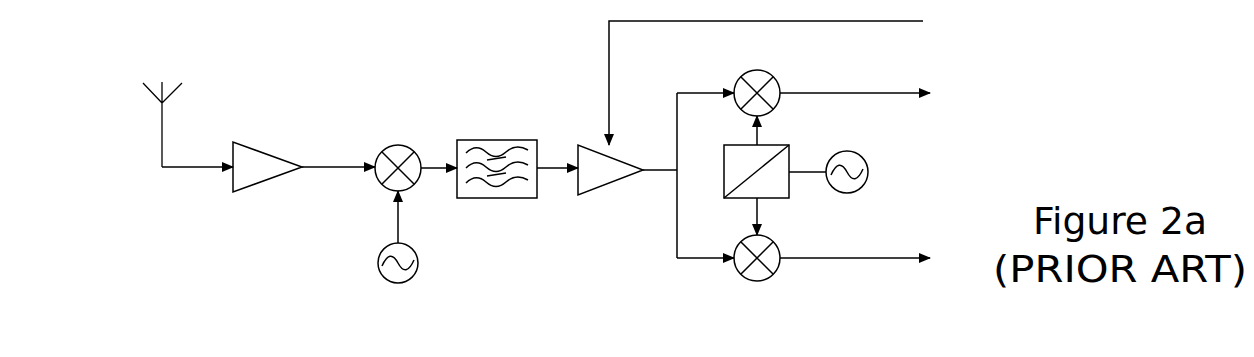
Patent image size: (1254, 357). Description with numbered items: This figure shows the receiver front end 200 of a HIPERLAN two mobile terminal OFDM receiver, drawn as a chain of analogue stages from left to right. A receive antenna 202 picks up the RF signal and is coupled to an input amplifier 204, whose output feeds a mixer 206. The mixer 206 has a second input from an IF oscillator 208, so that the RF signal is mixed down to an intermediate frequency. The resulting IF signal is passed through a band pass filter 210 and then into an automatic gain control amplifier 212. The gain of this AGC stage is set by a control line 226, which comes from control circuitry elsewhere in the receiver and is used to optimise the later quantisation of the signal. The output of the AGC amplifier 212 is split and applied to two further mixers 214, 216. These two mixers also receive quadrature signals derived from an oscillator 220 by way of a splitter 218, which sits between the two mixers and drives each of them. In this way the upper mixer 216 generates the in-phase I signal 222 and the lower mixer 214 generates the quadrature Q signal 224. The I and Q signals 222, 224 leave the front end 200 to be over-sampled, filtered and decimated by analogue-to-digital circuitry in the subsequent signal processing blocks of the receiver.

The receiver front end 200 is at (203, 248).
The receive antenna 202 is at (148, 93).
The input amplifier 204 is at (266, 150).
The mixer 206 is at (406, 147).
The IF oscillator 208 is at (412, 250).
The band pass filter 210 is at (510, 140).
The automatic gain control amplifier 212 is at (600, 188).
The mixer 214 is at (768, 276).
The mixer 216 is at (772, 75).
The splitter 218 is at (780, 145).
The oscillator 220 is at (868, 160).
The I signal 222 is at (822, 93).
The Q signal 224 is at (822, 258).
The control line 226 is at (609, 81).